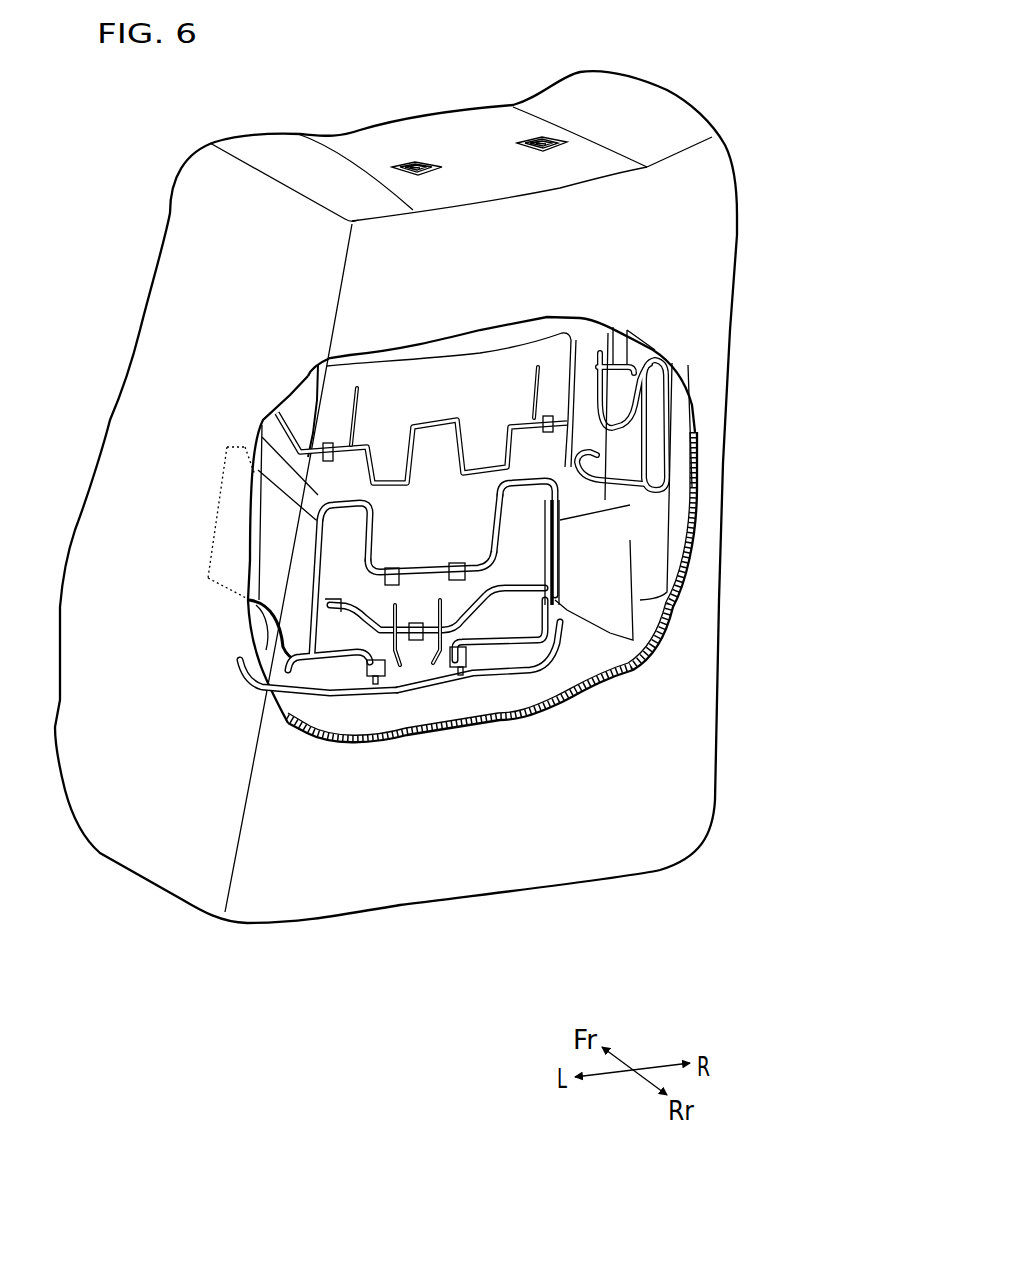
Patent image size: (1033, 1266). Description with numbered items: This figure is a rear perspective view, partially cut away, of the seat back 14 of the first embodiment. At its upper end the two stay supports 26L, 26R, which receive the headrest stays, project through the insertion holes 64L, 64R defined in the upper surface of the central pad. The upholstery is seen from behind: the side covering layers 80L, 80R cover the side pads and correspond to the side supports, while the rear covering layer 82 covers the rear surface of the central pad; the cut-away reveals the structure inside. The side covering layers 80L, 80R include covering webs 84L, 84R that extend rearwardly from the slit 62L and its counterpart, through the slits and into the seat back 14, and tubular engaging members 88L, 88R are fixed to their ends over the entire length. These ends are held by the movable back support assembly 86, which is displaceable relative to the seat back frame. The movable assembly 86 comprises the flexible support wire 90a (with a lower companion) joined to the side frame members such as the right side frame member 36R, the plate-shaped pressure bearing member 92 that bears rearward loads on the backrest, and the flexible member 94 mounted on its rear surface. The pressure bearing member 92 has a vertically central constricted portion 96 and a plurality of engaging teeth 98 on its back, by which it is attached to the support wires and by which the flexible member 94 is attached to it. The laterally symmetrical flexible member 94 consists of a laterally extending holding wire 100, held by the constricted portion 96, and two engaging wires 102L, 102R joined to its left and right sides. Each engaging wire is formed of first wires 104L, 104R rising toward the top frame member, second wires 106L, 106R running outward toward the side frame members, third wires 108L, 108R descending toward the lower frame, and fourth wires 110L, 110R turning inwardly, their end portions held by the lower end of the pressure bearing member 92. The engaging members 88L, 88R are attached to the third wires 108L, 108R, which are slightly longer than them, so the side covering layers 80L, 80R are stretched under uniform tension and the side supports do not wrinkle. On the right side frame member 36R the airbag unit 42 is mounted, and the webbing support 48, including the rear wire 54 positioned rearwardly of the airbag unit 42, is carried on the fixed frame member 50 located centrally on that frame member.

The seat back 14 is at (340, 46).
The stay support 26L is at (410, 122).
The stay support 26R is at (544, 105).
The insertion hole 64L is at (425, 160).
The insertion hole 64R is at (555, 137).
The side covering layer 80L is at (195, 213).
The side covering layer 80R is at (670, 120).
The rear covering layer 82 is at (578, 857).
The movable back support assembly 86 is at (316, 399).
The pressure bearing member 92 is at (426, 388).
The support wire 90a is at (440, 420).
The flexible member 94 is at (460, 546).
The constricted portion 96 is at (258, 450).
The engaging teeth 98 is at (345, 450).
The holding wire 100 is at (423, 567).
The engaging wire 102L is at (287, 677).
The engaging wire 102R is at (530, 647).
The first wire 104L is at (323, 530).
The first wire 104R is at (512, 510).
The second wire 106L is at (345, 503).
The second wire 106R is at (525, 483).
The third wire 108L is at (313, 577).
The third wire 108R is at (590, 540).
The fourth wire 110L is at (350, 660).
The fourth wire 110R is at (497, 637).
The engaging member 88L is at (217, 512).
The engaging member 88R is at (670, 582).
The covering web 84L is at (258, 603).
The covering web 84R is at (560, 593).
The slit 62L is at (208, 580).
The airbag unit 42 is at (647, 535).
The webbing support 48 is at (672, 421).
The fixed frame member 50 is at (640, 349).
The rear wire 54 is at (660, 440).
The side frame member 36R is at (617, 627).